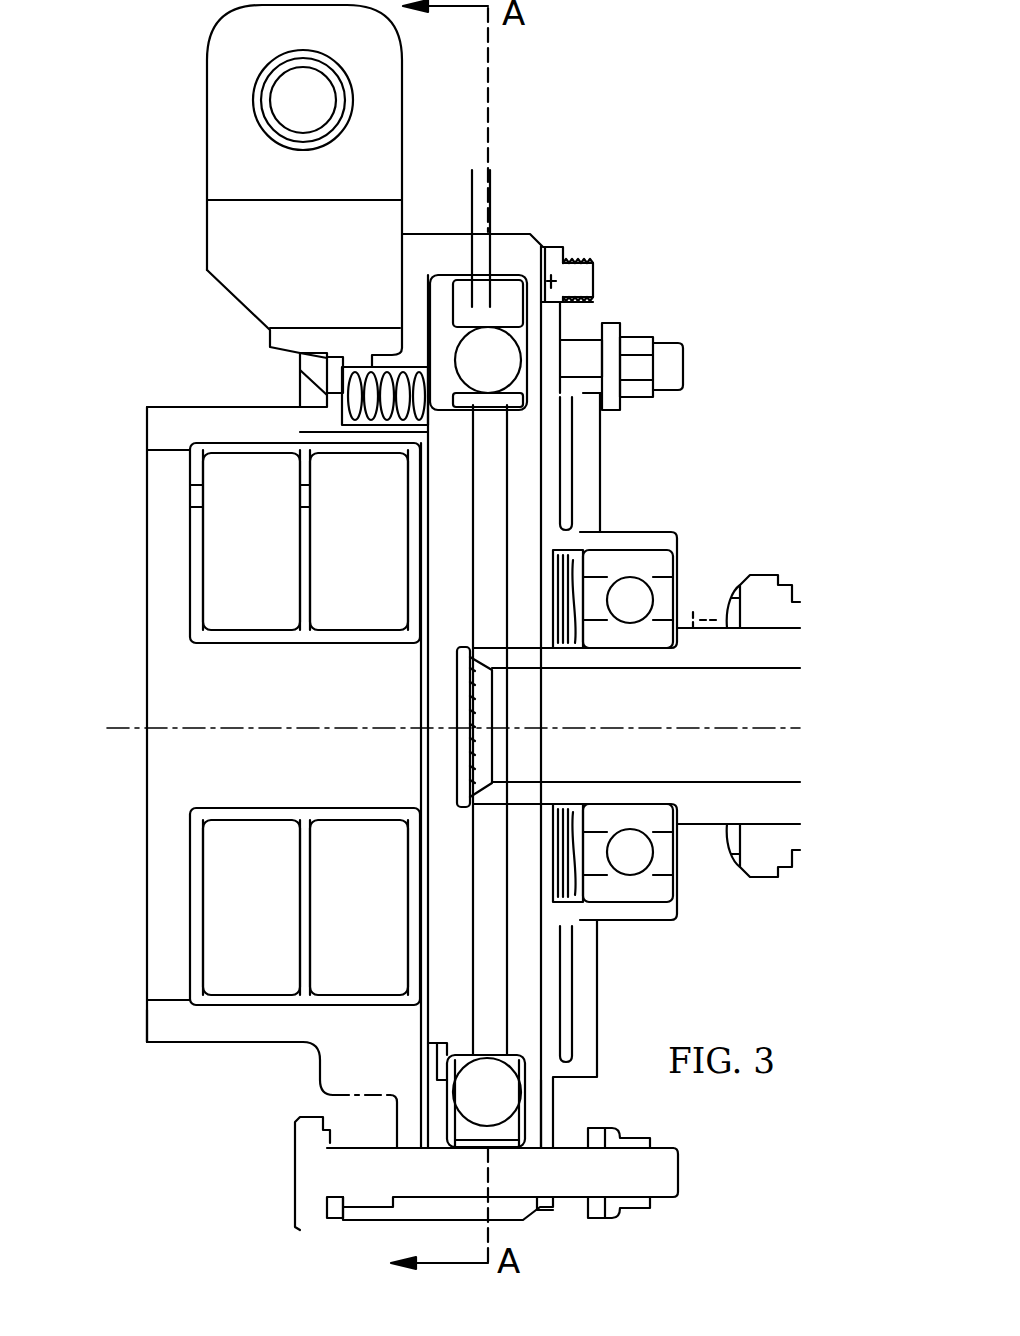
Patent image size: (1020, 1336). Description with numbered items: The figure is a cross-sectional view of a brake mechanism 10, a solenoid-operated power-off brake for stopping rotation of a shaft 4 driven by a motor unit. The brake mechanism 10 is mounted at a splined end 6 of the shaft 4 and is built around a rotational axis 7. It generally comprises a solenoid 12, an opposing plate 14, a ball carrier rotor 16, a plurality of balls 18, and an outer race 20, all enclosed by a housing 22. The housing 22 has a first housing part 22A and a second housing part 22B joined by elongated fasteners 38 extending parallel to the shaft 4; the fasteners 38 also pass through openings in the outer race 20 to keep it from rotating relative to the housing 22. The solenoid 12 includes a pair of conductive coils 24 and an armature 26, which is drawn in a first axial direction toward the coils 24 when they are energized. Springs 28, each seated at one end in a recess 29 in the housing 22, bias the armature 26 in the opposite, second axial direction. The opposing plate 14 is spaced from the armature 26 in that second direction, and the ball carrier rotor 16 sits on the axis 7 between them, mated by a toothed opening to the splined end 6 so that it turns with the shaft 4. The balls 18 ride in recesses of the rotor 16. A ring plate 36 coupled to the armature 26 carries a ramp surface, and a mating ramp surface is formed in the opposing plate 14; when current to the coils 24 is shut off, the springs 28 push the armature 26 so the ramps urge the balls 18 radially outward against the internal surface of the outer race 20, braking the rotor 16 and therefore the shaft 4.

The shaft 4 is at (697, 797).
The splined end 6 is at (473, 660).
The rotational axis 7 is at (693, 730).
The brake mechanism 10 is at (660, 236).
The solenoid 12 is at (292, 661).
The opposing plate 14 is at (530, 397).
The ball carrier rotor 16 is at (500, 497).
The balls 18 is at (490, 352).
The outer race 20 is at (473, 297).
The housing 22 is at (304, 1040).
The first housing part 22A is at (225, 1027).
The second housing part 22B is at (547, 1102).
The conductive coils 24 is at (265, 557).
The armature 26 is at (440, 640).
The springs 28 is at (372, 427).
The recess 29 is at (343, 395).
The ring plate 36 is at (447, 298).
The elongated fasteners 38 is at (580, 342).